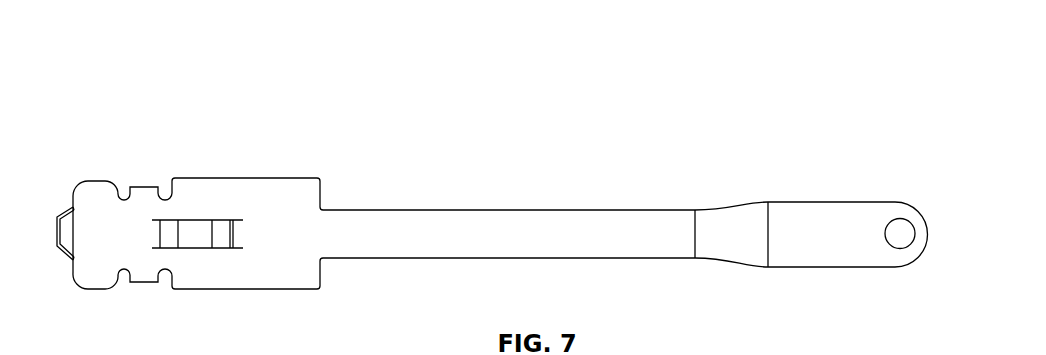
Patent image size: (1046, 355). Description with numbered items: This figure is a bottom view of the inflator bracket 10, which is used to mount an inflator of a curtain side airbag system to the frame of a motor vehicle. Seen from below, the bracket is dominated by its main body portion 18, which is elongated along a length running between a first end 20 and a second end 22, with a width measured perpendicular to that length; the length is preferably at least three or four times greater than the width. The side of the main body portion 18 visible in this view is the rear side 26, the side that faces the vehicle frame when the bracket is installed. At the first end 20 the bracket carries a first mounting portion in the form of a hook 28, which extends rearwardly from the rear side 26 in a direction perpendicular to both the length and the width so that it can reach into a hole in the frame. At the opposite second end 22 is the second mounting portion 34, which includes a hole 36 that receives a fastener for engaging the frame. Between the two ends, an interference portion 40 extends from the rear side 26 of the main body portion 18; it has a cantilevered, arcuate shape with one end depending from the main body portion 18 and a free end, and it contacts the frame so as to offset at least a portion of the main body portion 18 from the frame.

The inflator bracket 10 is at (832, 112).
The main body portion 18 is at (530, 209).
The first end 20 is at (73, 232).
The second end 22 is at (929, 237).
The rear side 26 is at (390, 247).
The hook 28 is at (45, 238).
The second mounting portion 34 is at (927, 206).
The hole 36 is at (895, 248).
The interference portion 40 is at (192, 232).